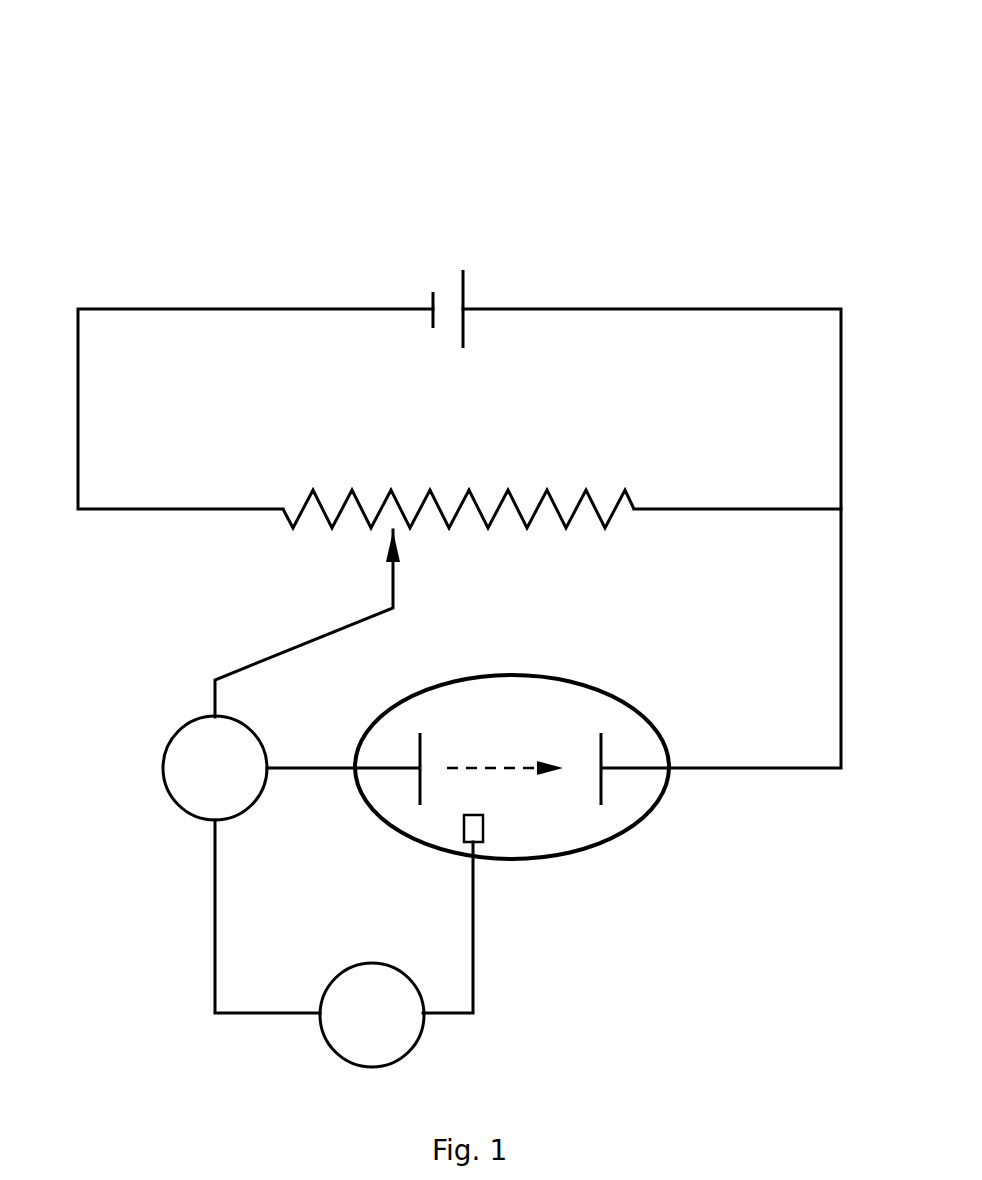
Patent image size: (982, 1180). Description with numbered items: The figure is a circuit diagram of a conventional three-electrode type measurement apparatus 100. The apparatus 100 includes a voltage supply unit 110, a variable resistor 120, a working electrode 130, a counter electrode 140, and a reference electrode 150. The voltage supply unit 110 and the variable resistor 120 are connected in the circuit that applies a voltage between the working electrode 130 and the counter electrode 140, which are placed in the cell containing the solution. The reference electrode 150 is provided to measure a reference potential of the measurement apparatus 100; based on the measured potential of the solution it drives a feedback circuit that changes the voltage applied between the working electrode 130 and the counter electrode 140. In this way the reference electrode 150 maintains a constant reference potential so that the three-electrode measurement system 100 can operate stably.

The 3-electrode type measurement apparatus 100 is at (528, 51).
The voltage supply unit 110 is at (450, 263).
The variable resistor 120 is at (433, 478).
The working electrode 130 is at (413, 790).
The counter electrode 140 is at (622, 792).
The reference electrode 150 is at (483, 828).